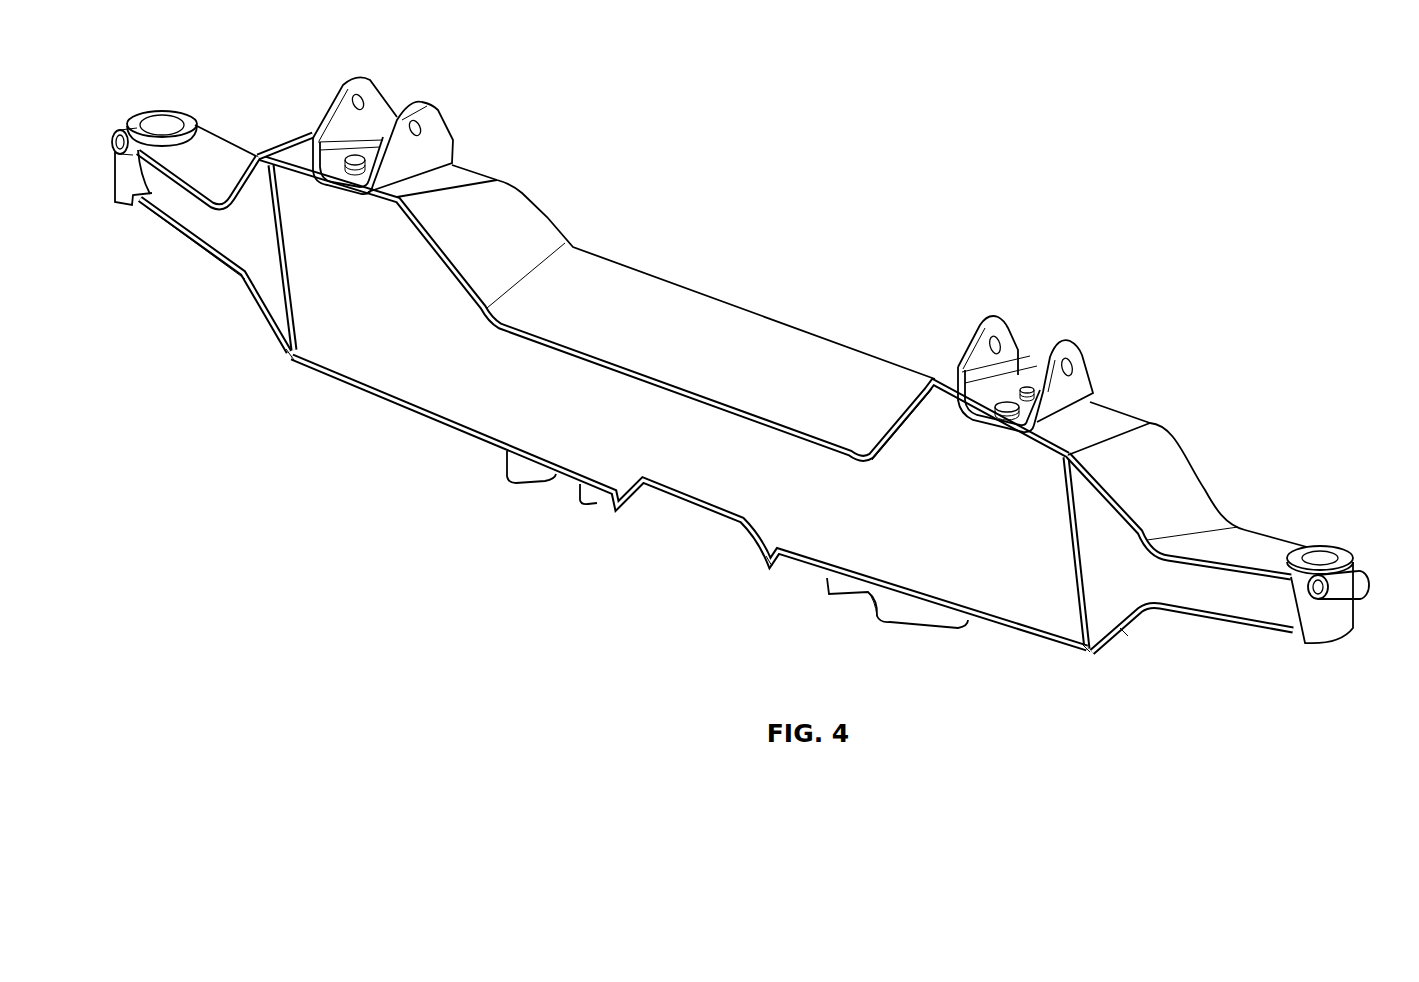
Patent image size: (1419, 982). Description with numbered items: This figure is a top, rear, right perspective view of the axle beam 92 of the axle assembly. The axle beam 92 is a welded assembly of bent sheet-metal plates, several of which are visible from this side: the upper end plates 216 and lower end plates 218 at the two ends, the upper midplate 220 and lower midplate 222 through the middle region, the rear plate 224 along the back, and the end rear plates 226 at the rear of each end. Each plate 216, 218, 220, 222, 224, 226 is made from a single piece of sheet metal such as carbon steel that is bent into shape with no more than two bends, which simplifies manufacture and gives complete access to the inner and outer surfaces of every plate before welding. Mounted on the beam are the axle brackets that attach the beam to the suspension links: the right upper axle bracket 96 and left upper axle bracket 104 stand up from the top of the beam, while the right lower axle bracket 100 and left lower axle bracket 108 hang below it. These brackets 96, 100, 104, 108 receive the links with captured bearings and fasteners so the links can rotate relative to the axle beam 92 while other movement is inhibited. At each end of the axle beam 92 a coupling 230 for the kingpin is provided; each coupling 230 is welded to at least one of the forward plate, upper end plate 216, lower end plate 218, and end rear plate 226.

The axle beam 92 is at (690, 318).
The right upper axle bracket 96 is at (1060, 342).
The right lower axle bracket 100 is at (898, 609).
The left upper axle bracket 104 is at (420, 104).
The left lower axle bracket 108 is at (523, 482).
The upper end plate 216 is at (221, 149).
The lower end plate 218 is at (274, 352).
The upper midplate 220 is at (876, 386).
The lower midplate 222 is at (766, 560).
The rear plate 224 is at (1047, 589).
The end rear plate 226 is at (232, 243).
The coupling 230 is at (158, 112).